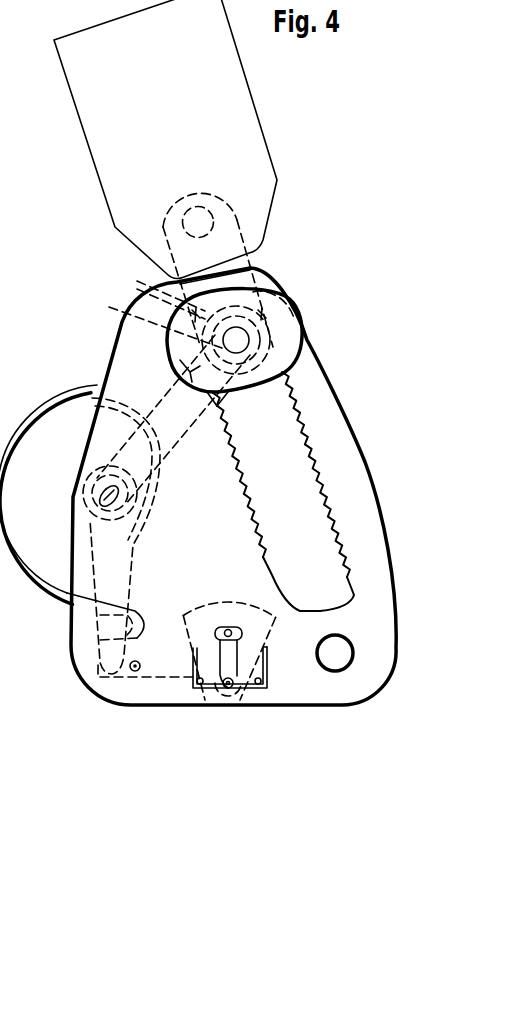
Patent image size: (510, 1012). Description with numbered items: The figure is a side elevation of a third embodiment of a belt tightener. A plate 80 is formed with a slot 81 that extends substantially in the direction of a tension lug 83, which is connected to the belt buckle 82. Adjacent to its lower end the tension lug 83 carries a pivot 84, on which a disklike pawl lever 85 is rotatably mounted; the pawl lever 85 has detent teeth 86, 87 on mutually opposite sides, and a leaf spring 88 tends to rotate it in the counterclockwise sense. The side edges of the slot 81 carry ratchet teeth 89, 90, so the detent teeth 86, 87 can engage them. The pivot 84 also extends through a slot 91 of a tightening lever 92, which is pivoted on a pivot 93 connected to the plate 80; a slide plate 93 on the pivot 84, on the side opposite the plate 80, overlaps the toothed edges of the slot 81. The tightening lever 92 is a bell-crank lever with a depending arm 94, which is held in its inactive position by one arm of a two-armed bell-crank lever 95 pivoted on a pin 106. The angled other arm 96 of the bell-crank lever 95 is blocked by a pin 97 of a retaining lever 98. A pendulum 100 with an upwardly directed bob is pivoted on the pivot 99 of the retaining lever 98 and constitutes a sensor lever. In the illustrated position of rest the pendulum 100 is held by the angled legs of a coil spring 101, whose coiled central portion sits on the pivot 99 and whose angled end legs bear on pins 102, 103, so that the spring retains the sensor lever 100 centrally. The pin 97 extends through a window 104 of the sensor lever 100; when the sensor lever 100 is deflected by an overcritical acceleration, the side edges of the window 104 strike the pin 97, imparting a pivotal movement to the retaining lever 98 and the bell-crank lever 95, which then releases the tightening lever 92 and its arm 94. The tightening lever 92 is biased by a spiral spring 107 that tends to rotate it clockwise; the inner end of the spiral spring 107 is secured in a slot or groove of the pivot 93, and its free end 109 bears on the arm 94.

The plate 80 is at (347, 444).
The slot 81 is at (302, 430).
The belt buckle 82 is at (247, 126).
The tension lug 83 is at (252, 262).
The pivot 84 is at (289, 303).
The pawl lever 85 is at (263, 388).
The detent tooth 86 is at (303, 331).
The detent tooth 87 is at (160, 294).
The leaf spring 88 is at (273, 280).
The ratchet teeth 89 is at (243, 497).
The ratchet teeth 90 is at (323, 503).
The slot 91 is at (154, 320).
The tightening lever 92 is at (185, 437).
The pivot 93 is at (100, 497).
The depending arm 94 is at (137, 547).
The bell-crank lever 95 is at (170, 680).
The angled arm 96 is at (225, 652).
The pin 97 is at (224, 625).
The retaining lever 98 is at (212, 657).
The pivot 99 is at (232, 691).
The pendulum 100 is at (198, 613).
The coil spring 101 is at (259, 688).
The pin 102 is at (203, 689).
The pin 103 is at (268, 678).
The window 104 is at (238, 623).
The pin 106 is at (139, 661).
The spiral spring 107 is at (44, 410).
The free end 109 is at (100, 640).